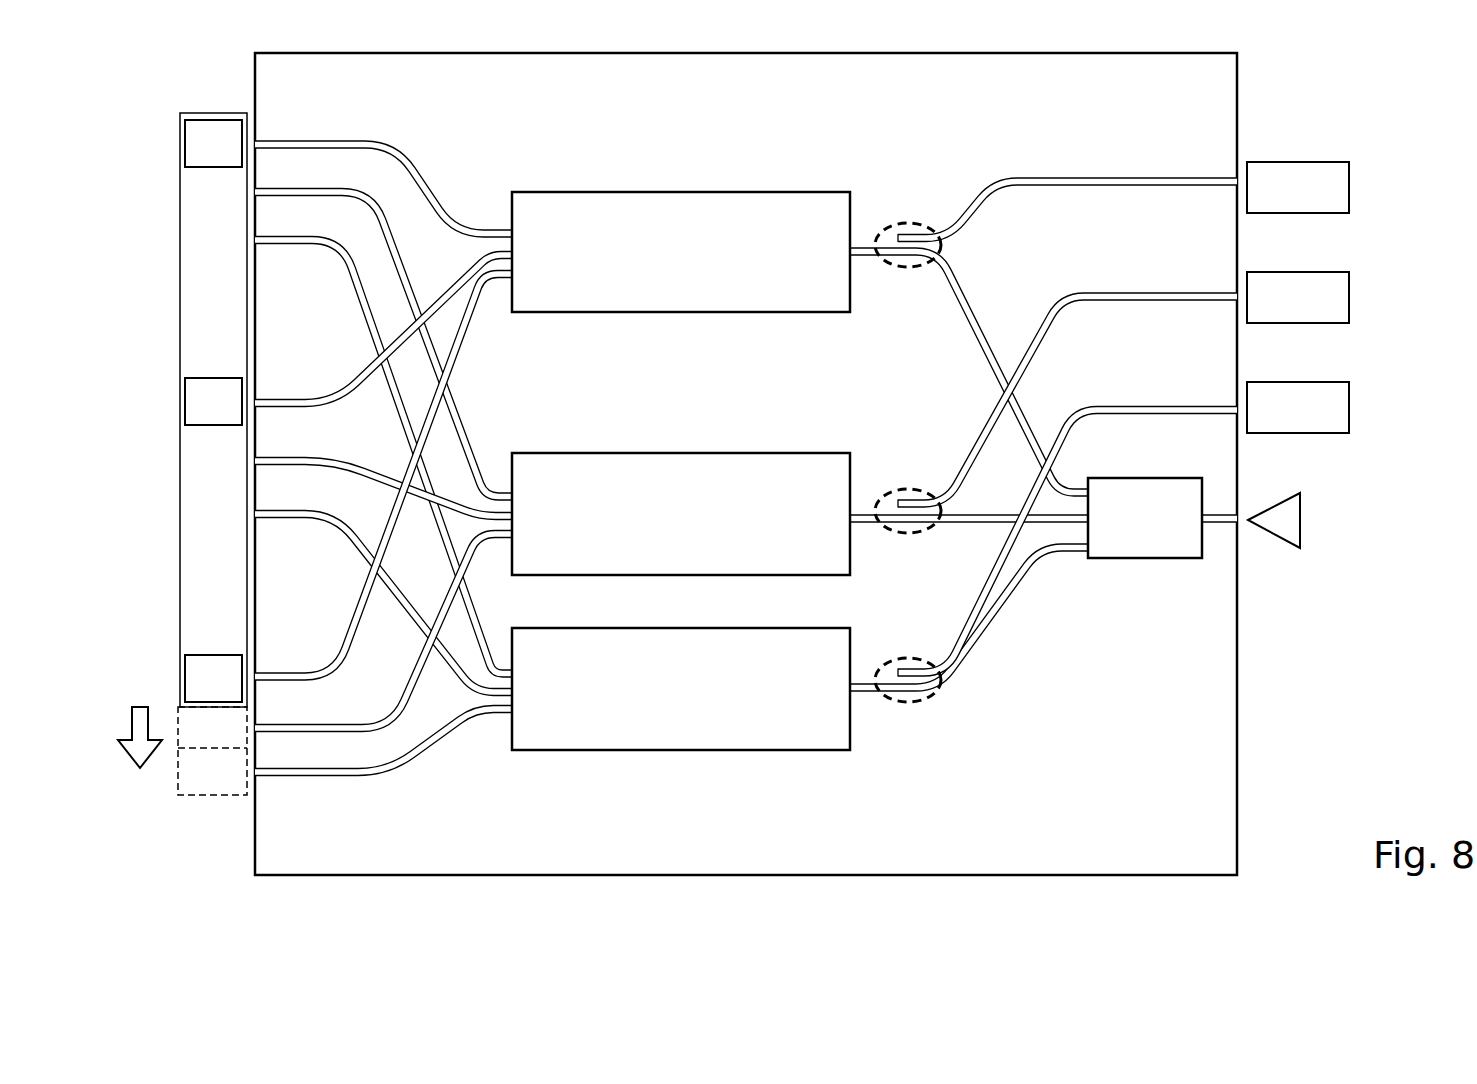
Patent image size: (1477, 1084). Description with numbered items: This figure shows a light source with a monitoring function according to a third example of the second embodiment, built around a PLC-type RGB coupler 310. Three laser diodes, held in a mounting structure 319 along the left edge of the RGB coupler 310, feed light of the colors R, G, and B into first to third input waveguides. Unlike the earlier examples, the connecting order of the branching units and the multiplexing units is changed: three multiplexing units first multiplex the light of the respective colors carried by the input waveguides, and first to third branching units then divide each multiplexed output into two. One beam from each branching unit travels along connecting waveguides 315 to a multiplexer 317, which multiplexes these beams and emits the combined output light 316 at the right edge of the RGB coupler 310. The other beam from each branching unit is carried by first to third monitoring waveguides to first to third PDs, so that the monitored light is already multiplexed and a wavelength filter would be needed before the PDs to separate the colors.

The RGB coupler 310 is at (1240, 72).
The light source holder 319 is at (180, 287).
The waveguides to combiner 315 is at (1065, 494).
The multiplexer 317 is at (1145, 478).
The output light 316 is at (1300, 520).